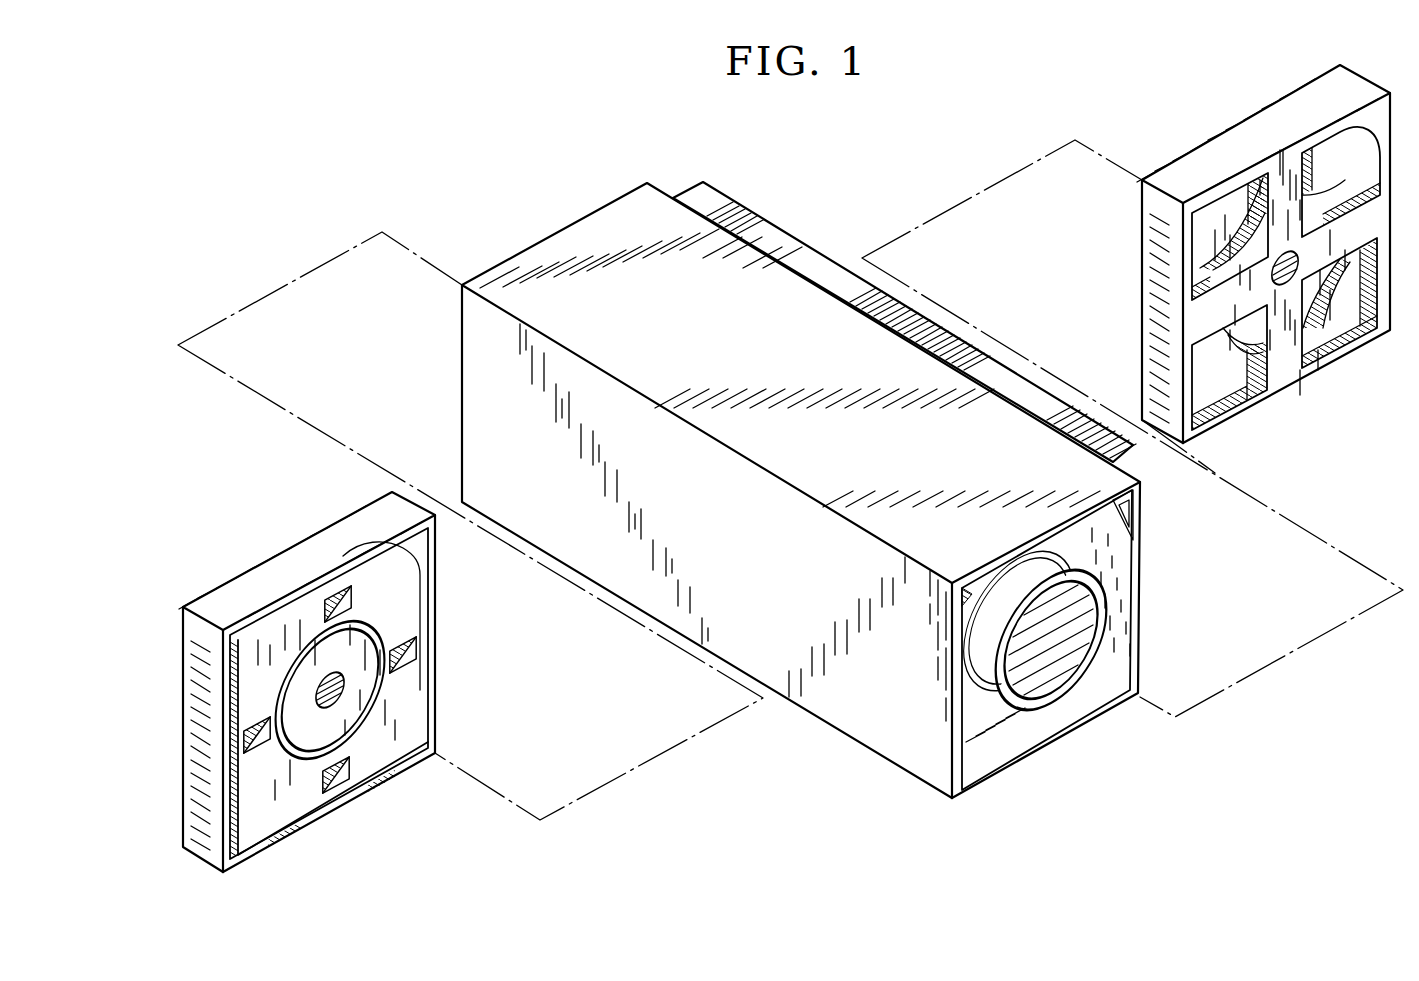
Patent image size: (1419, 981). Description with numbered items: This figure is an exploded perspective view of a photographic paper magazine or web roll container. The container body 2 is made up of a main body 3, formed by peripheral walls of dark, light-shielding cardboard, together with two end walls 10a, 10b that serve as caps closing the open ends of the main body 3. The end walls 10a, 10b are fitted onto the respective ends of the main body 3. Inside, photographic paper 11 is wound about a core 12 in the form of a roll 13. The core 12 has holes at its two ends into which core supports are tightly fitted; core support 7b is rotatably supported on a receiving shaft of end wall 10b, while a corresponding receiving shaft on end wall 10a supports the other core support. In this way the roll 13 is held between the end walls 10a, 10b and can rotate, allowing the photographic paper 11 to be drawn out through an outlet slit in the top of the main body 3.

The container body 2 is at (1099, 729).
The main body 3 is at (1141, 623).
The core support 7b is at (358, 645).
The end wall 10a is at (1325, 377).
The end wall 10b is at (382, 784).
The photographic paper 11 is at (810, 258).
The core 12 is at (1028, 706).
The roll 13 is at (1085, 550).